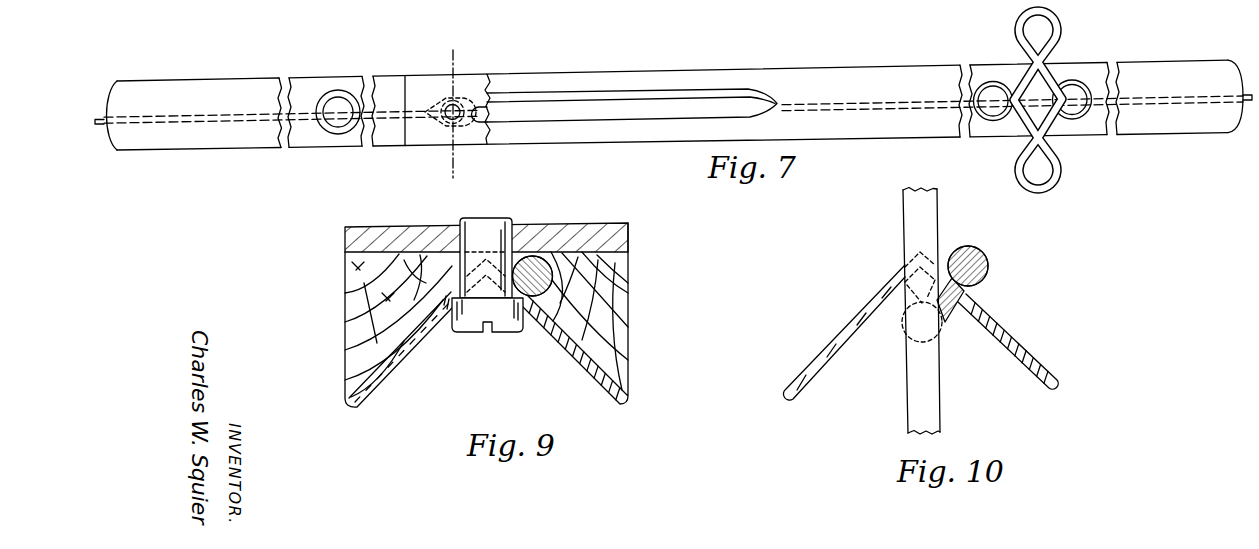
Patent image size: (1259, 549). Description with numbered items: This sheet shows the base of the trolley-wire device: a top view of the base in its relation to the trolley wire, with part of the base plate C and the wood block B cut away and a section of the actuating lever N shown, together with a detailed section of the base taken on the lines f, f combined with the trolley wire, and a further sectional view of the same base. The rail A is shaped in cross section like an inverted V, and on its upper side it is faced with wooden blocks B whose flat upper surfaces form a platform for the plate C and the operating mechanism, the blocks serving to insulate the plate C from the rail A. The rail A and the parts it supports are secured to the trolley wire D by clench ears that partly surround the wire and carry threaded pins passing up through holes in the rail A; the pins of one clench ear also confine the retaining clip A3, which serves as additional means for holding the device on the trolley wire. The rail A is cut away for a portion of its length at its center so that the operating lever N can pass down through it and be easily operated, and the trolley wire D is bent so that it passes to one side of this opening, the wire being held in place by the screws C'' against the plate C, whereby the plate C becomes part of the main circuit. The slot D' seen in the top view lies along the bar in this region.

In FIG. 7, the rail A is at (1162, 123).
In FIG. 9, the rail A is at (586, 367).
In FIG. 10, the rail A is at (852, 323).
In FIG. 7, the plate C is at (667, 124).
In FIG. 9, the plate C is at (502, 237).
In FIG. 7, the screws C'' is at (470, 81).
In FIG. 9, the screws C'' is at (475, 298).
In FIG. 7, the section lines f is at (451, 113).
In FIG. 7, the blade slot D' is at (625, 105).
In FIG. 7, the retaining clip A3 is at (1041, 141).
In FIG. 9, the wood block B is at (320, 331).
In FIG. 9, the trolley wire D is at (538, 310).
In FIG. 10, the trolley wire D is at (991, 284).
In FIG. 10, the actuating lever N is at (933, 399).